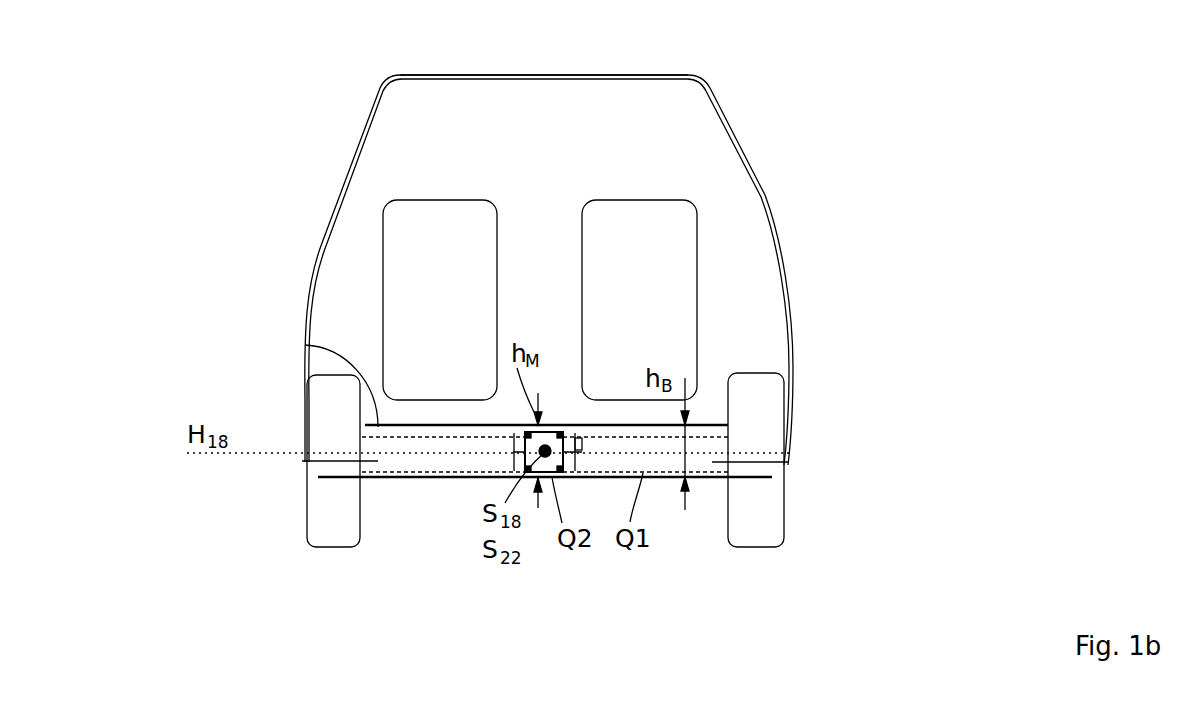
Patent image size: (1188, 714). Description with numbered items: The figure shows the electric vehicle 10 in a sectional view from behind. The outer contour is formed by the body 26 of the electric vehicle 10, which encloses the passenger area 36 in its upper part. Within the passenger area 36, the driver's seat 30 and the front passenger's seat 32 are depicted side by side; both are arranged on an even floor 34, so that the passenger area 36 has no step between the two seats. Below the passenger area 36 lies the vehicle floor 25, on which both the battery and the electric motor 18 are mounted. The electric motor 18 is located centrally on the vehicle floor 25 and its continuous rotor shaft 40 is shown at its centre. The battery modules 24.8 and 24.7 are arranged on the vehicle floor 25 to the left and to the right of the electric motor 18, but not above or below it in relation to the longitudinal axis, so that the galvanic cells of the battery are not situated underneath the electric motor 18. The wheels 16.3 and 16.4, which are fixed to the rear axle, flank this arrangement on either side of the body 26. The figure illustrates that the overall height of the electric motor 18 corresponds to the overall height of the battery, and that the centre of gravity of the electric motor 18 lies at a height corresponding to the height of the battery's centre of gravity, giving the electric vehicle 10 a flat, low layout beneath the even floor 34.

The electric vehicle 10 is at (777, 95).
The body 26 is at (790, 280).
The passenger area 36 is at (544, 101).
The driver's seat 30 is at (458, 228).
The front passenger's seat 32 is at (658, 232).
The even floor 34 is at (305, 345).
The wheel 16.3 is at (323, 525).
The wheel 16.4 is at (763, 522).
The battery module 24.8 is at (415, 478).
The battery module 24.7 is at (655, 463).
The vehicle floor 25 is at (455, 478).
The electric motor 18 is at (545, 451).
The continuous rotor shaft 40 is at (545, 475).